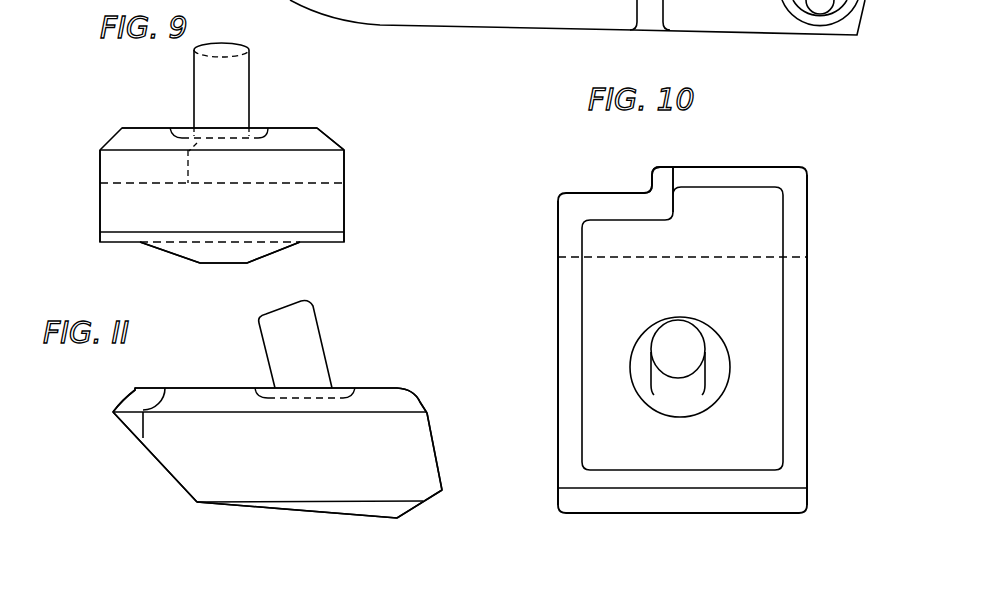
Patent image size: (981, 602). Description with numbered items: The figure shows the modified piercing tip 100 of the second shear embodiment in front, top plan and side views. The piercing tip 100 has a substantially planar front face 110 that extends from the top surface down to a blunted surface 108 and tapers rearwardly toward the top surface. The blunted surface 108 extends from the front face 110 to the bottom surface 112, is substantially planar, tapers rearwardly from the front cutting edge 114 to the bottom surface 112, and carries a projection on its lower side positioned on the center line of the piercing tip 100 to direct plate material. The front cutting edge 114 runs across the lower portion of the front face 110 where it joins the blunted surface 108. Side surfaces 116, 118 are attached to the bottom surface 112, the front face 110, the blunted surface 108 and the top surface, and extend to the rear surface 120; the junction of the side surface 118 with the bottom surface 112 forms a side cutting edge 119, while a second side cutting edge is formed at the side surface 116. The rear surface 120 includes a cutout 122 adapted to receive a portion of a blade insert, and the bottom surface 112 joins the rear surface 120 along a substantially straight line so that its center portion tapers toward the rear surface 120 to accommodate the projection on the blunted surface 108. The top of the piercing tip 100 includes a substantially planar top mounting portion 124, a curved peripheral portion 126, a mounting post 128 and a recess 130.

In FIG. 9, the piercing tip 100 is at (95, 128).
In FIG. 10, the piercing tip 100 is at (527, 198).
In FIG. 9, the blunted surface 108 is at (260, 248).
In FIG. 11, the blunted surface 108 is at (403, 513).
In FIG. 9, the front face 110 is at (287, 219).
In FIG. 11, the front face 110 is at (435, 443).
In FIG. 10, the front face 110 is at (692, 503).
In FIG. 9, the bottom surface 112 is at (165, 250).
In FIG. 11, the bottom surface 112 is at (353, 508).
In FIG. 9, the front cutting edge 114 is at (327, 230).
In FIG. 11, the front cutting edge 114 is at (442, 490).
In FIG. 9, the side surface 116 is at (345, 162).
In FIG. 10, the side surface 116 is at (807, 322).
In FIG. 9, the side surface 118 is at (100, 200).
In FIG. 11, the side surface 118 is at (311, 462).
In FIG. 10, the side surface 118 is at (558, 310).
In FIG. 11, the side cutting edge 119 is at (388, 498).
In FIG. 11, the rear surface 120 is at (167, 472).
In FIG. 10, the rear surface 120 is at (755, 165).
In FIG. 11, the cutout 122 is at (133, 422).
In FIG. 10, the cutout 122 is at (637, 188).
In FIG. 9, the top mounting portion 124 is at (155, 128).
In FIG. 11, the top mounting portion 124 is at (222, 387).
In FIG. 10, the top mounting portion 124 is at (738, 450).
In FIG. 9, the curved peripheral portion 126 is at (297, 138).
In FIG. 11, the curved peripheral portion 126 is at (388, 407).
In FIG. 10, the curved peripheral portion 126 is at (795, 435).
In FIG. 9, the mounting post 128 is at (237, 63).
In FIG. 11, the mounting post 128 is at (260, 318).
In FIG. 10, the mounting post 128 is at (673, 333).
In FIG. 9, the recess 130 is at (258, 130).
In FIG. 11, the recess 130 is at (343, 397).
In FIG. 10, the recess 130 is at (720, 342).